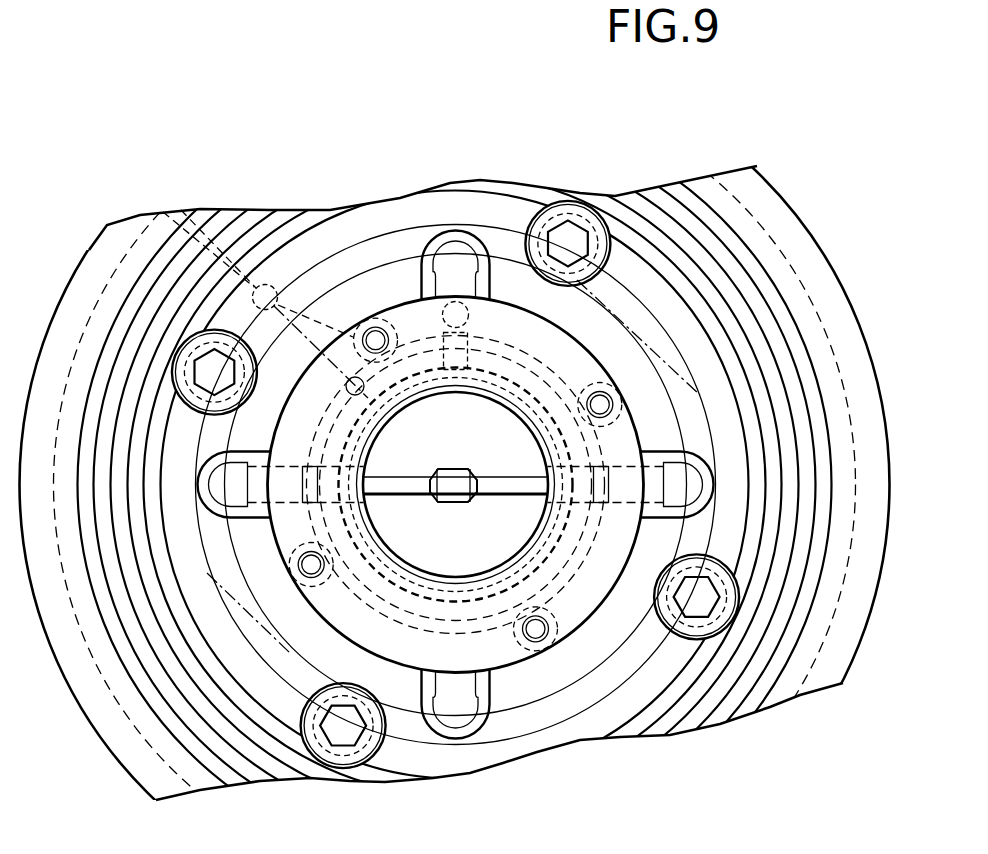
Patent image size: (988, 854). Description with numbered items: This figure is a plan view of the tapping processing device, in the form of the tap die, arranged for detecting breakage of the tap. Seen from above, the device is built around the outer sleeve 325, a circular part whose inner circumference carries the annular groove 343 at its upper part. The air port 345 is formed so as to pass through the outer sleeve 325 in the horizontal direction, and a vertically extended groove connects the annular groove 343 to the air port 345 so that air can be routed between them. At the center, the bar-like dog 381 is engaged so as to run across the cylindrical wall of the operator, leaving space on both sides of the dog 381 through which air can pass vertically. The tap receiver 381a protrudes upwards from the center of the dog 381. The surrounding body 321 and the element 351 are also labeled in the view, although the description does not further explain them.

The housing body 321 is at (680, 337).
The hub 325 is at (646, 442).
The flange plate 343 is at (606, 440).
The passage 345 is at (340, 345).
The pin 351 is at (300, 305).
The shaft 381 is at (495, 480).
The block 381a is at (455, 469).